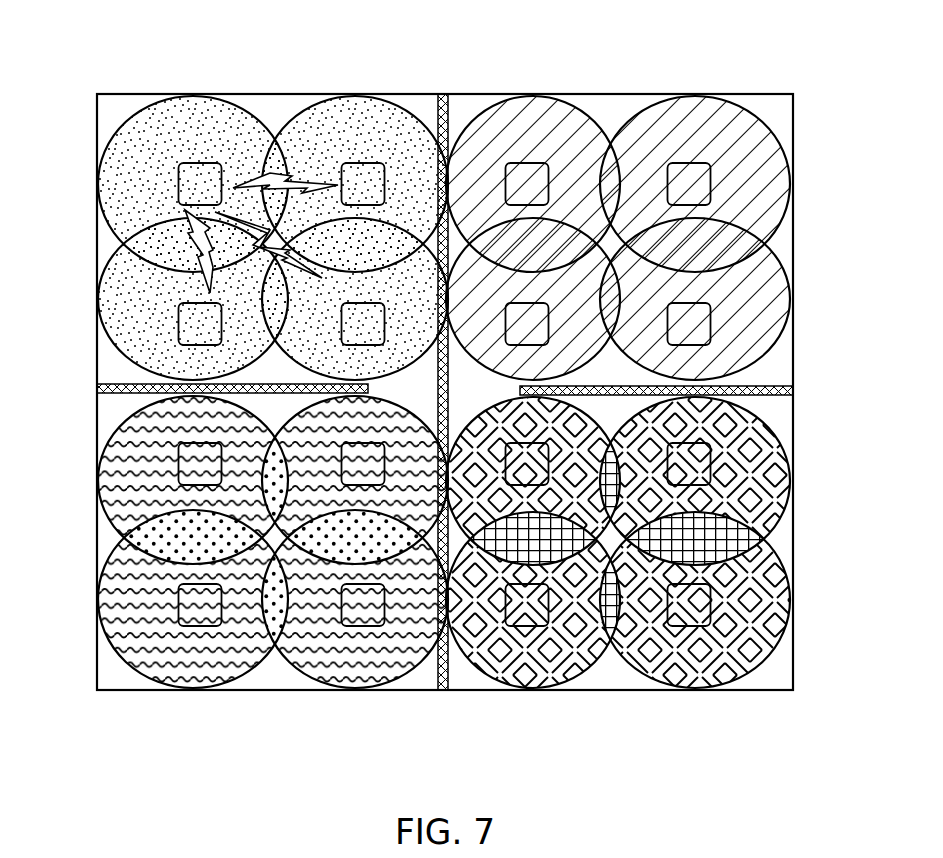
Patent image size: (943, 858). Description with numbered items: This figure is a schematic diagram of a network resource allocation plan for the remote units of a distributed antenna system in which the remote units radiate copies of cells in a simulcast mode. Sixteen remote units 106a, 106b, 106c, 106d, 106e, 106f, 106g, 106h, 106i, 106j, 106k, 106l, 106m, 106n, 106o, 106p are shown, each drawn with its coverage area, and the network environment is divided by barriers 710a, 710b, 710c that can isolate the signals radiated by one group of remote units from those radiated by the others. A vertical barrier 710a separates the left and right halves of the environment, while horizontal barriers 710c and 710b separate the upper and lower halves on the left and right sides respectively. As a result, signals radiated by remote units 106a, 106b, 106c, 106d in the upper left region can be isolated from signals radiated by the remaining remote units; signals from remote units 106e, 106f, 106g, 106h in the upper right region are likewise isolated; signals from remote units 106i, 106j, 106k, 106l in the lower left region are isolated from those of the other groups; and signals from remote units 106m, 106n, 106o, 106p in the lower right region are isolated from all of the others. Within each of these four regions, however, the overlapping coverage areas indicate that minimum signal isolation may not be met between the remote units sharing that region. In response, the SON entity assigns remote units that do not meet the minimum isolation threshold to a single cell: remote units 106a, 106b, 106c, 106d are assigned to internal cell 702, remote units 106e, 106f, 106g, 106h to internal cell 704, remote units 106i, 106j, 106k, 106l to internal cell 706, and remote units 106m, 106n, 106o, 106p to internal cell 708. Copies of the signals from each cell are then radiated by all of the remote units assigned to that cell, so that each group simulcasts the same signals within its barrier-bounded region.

The remote unit 106a is at (178, 187).
The remote unit 106b is at (367, 163).
The remote unit 106c is at (178, 323).
The remote unit 106d is at (370, 303).
The remote unit 106e is at (527, 163).
The remote unit 106f is at (697, 163).
The remote unit 106g is at (549, 322).
The remote unit 106h is at (712, 324).
The remote unit 106i is at (178, 466).
The remote unit 106j is at (341, 467).
The remote unit 106k is at (178, 608).
The remote unit 106l is at (365, 628).
The remote unit 106m is at (549, 463).
The remote unit 106n is at (712, 465).
The remote unit 106o is at (525, 627).
The remote unit 106p is at (712, 608).
The internal cell 702 is at (277, 60).
The internal cell 704 is at (620, 58).
The internal cell 706 is at (268, 730).
The internal cell 708 is at (625, 730).
The barrier 710a is at (444, 690).
The barrier 710b is at (793, 391).
The barrier 710c is at (97, 392).